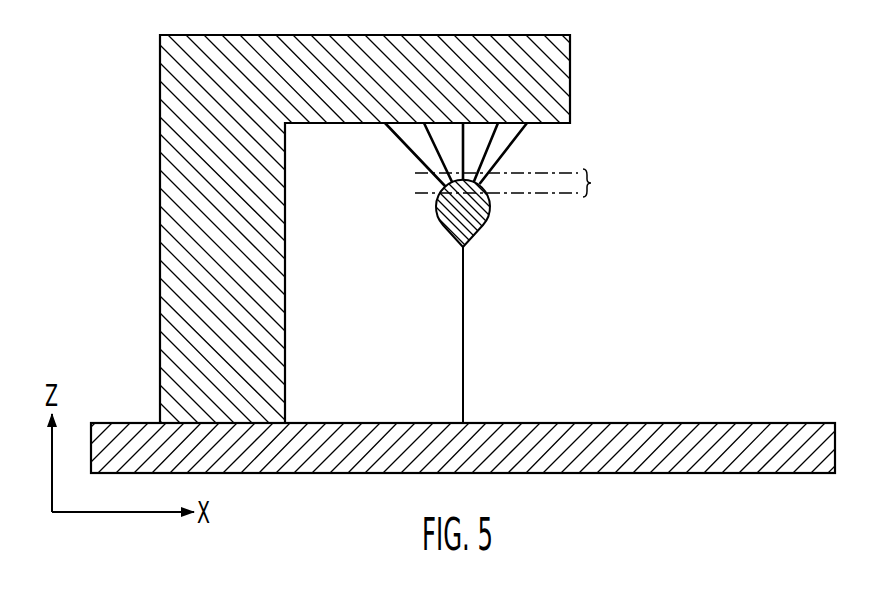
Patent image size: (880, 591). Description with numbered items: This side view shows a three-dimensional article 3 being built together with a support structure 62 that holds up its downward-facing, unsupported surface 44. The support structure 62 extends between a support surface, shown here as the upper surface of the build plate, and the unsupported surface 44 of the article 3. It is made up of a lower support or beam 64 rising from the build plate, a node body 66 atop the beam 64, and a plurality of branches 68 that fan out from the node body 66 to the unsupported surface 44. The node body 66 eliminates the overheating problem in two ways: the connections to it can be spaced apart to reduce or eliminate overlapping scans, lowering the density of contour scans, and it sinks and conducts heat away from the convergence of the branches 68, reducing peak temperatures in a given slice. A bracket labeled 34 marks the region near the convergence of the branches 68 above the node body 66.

The 3D article 3 is at (560, 67).
The unsupported surface 44 is at (545, 124).
The branches 68 is at (412, 152).
The focal region depth 34 is at (517, 183).
The node body 66 is at (482, 228).
The lower support or beam 64 is at (463, 357).
The support structure 62 is at (684, 262).